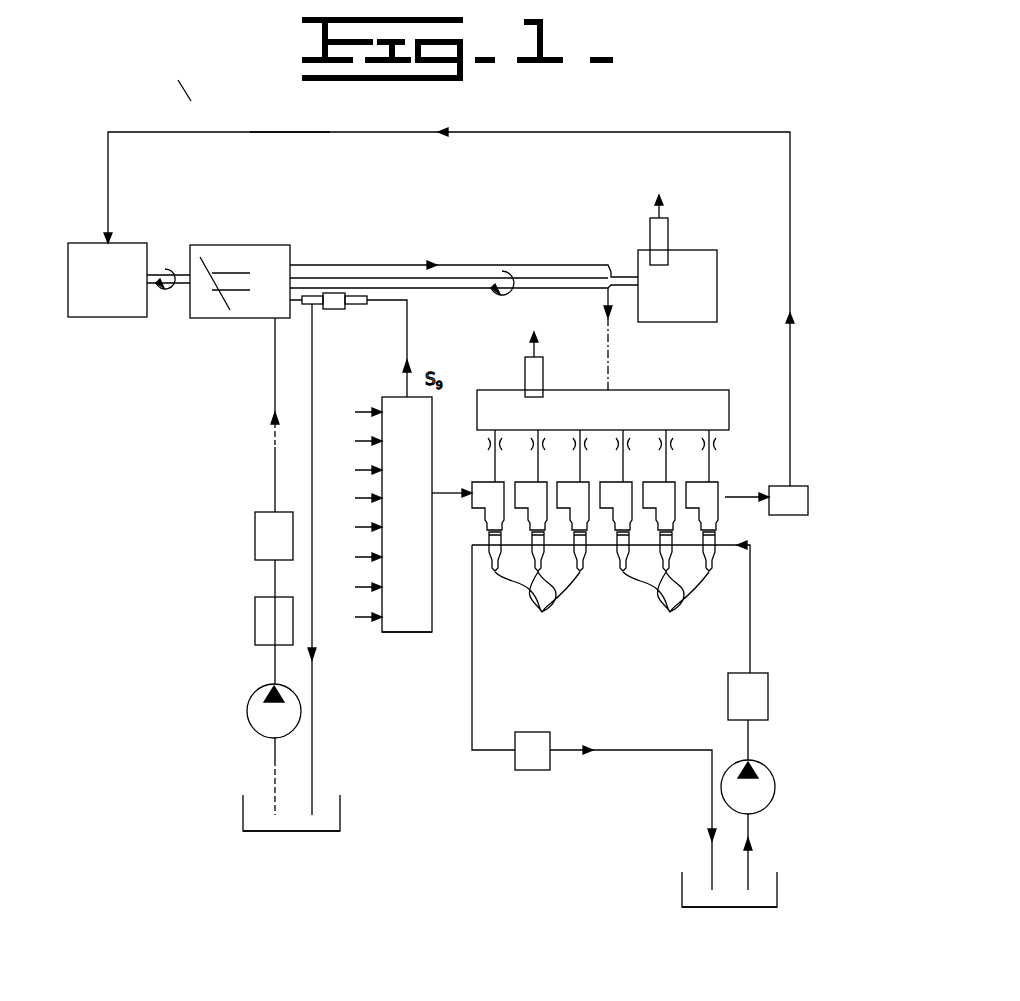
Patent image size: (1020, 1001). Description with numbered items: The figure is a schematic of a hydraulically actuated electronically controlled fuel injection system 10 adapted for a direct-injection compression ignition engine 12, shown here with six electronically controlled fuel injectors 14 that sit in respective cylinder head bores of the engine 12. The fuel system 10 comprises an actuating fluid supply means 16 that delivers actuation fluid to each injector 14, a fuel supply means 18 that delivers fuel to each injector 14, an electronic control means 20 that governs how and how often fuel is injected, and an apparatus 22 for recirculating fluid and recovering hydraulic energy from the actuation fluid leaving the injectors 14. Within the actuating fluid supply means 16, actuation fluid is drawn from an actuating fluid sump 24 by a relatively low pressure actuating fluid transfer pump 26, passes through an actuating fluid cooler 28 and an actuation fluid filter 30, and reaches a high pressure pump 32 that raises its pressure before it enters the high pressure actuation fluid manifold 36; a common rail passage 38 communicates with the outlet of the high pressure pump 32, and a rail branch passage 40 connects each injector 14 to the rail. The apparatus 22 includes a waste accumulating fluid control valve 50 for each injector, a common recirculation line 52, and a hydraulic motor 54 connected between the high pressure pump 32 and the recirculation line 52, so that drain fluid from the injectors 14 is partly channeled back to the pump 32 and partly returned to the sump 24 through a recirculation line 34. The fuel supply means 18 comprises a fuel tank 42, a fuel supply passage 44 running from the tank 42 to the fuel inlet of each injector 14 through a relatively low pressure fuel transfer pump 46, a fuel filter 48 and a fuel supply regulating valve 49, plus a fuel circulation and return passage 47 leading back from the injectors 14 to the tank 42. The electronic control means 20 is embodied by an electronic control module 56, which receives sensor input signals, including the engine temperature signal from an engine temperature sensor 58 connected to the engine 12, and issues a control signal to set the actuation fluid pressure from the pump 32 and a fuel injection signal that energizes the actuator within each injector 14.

The fuel injection system 10 is at (178, 80).
The engine 12 is at (690, 300).
The fuel injectors 14 is at (595, 533).
The actuating fluid supply means 16 is at (302, 860).
The fuel supply means 18 is at (731, 920).
The electronic control means 20 is at (402, 642).
The recirculating and hydraulic energy recovering means 22 is at (79, 154).
The actuating fluid sump 24 is at (340, 807).
The actuating fluid transfer pump 26 is at (254, 712).
The actuating fluid cooler 28 is at (258, 617).
The actuation fluid filter 30 is at (258, 546).
The high pressure pump 32 is at (232, 318).
The recirculation line 34 is at (314, 722).
The actuation fluid manifold 36 is at (648, 382).
The common rail passage 38 is at (524, 380).
The rail branch passage 40 is at (708, 455).
The fuel tank 42 is at (680, 890).
The fuel supply passage 44 is at (748, 650).
The fuel transfer pump 46 is at (772, 763).
The fuel circulation and return passage 47 is at (710, 813).
The fuel filter 48 is at (768, 692).
The fuel supply regulating valve 49 is at (528, 772).
The waste accumulating fluid control valve 50 is at (800, 512).
The common recirculation line 52 is at (275, 133).
The hydraulic motor 54 is at (112, 297).
The electronic control module 56 is at (418, 532).
The engine temperature sensor 58 is at (668, 235).